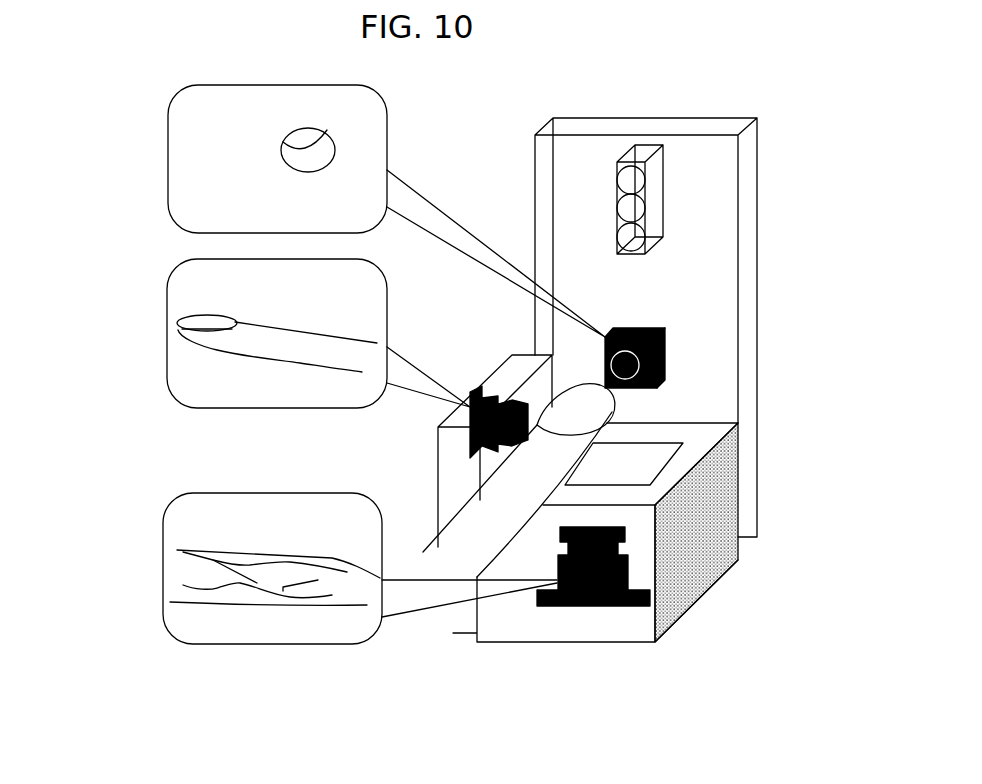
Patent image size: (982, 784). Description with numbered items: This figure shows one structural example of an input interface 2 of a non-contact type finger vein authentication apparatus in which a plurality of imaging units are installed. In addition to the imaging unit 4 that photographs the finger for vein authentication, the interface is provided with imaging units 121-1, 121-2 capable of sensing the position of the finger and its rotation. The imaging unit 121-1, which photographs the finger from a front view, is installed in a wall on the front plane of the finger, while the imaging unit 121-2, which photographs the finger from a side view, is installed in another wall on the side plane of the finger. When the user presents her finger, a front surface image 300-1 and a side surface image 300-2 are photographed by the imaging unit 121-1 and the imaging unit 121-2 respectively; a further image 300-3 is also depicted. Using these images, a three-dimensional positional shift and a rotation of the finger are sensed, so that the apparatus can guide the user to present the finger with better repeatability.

The input interface 2 is at (728, 163).
The imaging unit 4 is at (632, 605).
The imaging unit 121-1 is at (668, 365).
The imaging unit 121-2 is at (474, 448).
The front surface image 300-1 is at (175, 152).
The side surface image 300-2 is at (175, 368).
The hand bubble 300-3 is at (177, 603).